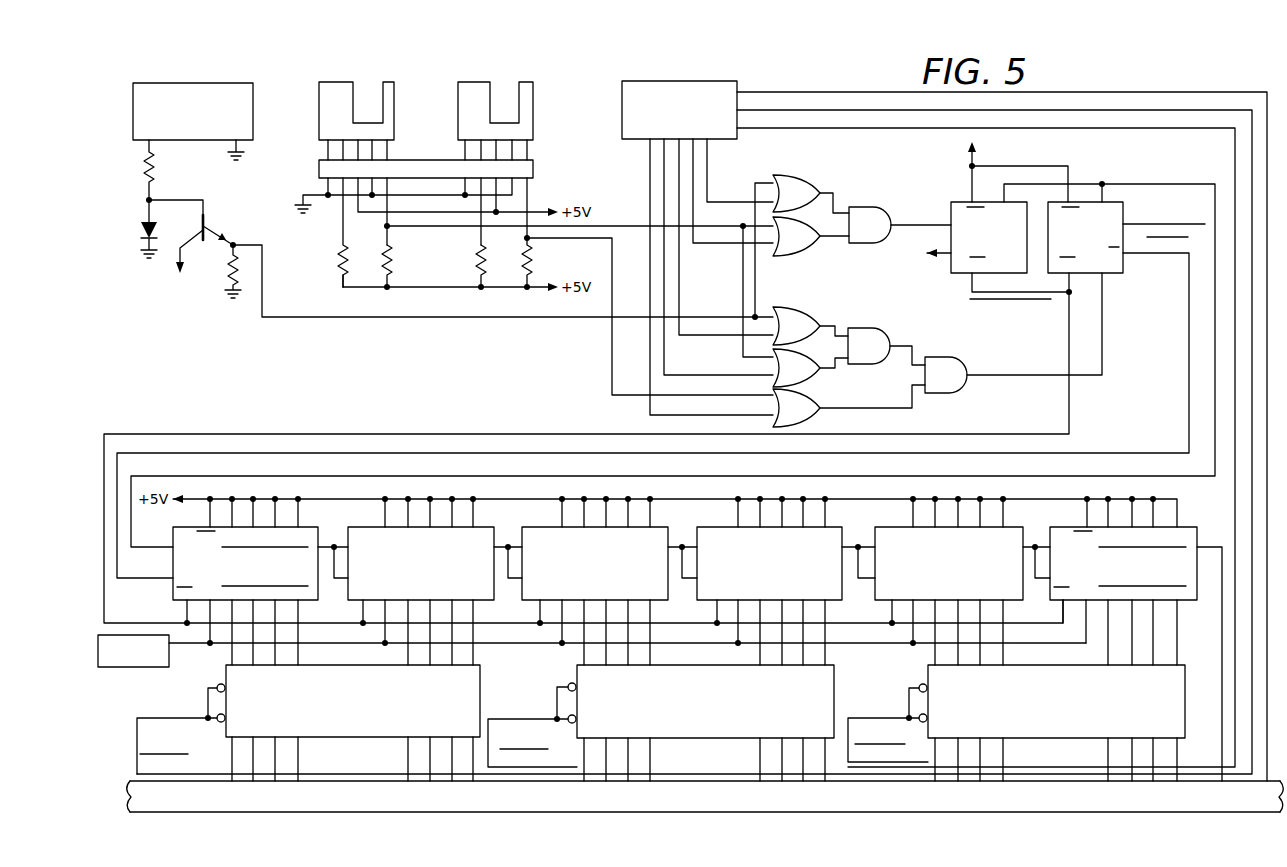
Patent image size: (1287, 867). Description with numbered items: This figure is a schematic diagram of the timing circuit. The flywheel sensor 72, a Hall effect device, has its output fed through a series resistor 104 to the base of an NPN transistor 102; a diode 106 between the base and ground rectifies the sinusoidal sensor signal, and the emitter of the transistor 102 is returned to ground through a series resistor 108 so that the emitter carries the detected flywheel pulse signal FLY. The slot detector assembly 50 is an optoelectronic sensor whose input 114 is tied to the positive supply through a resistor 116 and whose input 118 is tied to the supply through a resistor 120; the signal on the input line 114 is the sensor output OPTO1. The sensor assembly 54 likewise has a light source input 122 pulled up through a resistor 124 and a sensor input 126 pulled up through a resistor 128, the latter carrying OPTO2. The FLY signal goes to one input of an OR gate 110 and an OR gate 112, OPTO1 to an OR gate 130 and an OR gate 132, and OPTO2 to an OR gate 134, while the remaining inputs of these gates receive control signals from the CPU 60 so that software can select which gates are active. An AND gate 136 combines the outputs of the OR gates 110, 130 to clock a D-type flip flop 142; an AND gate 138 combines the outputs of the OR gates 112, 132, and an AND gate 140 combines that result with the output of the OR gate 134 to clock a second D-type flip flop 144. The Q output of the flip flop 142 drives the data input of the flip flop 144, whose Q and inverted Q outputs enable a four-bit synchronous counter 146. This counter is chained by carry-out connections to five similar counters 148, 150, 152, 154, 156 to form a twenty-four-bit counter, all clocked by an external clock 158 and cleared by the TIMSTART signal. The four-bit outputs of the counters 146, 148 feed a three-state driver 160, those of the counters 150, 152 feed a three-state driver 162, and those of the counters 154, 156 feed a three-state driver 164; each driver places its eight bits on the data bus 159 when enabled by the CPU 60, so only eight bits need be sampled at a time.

The slot detector assembly 50 is at (533, 93).
The sensor assembly 54 is at (394, 96).
The CPU 60 is at (740, 84).
The flywheel sensor 72 is at (255, 91).
The NPN transistor 102 is at (210, 224).
The series resistor 104 is at (155, 177).
The diode 106 is at (144, 231).
The series resistor 108 is at (226, 270).
The OR gate 110 is at (786, 201).
The OR gate 112 is at (786, 334).
The input 114 is at (530, 198).
The resistor 116 is at (530, 268).
The input 118 is at (481, 238).
The resistor 120 is at (481, 270).
The light source input 122 is at (343, 248).
The resistor 124 is at (343, 269).
The sensor input 126 is at (385, 232).
The resistor 128 is at (388, 270).
The OR gate 130 is at (786, 244).
The OR gate 132 is at (786, 376).
The OR gate 134 is at (786, 416).
The AND gate 136 is at (857, 233).
The AND gate 138 is at (856, 354).
The AND gate 140 is at (933, 383).
The D-type flip flop 142 is at (950, 276).
The D-type flip flop 144 is at (1125, 276).
The 4-bit synchronous counter 146 is at (315, 525).
The 4-bit synchronous counter 148 is at (488, 525).
The 4-bit synchronous counter 150 is at (662, 525).
The 4-bit synchronous counter 152 is at (837, 525).
The 4-bit synchronous counter 154 is at (1010, 527).
The 4-bit synchronous counter 156 is at (1184, 527).
The external clock 158 is at (128, 667).
The data bus 159 is at (757, 808).
The three-state driver 160 is at (483, 686).
The three-state driver 162 is at (836, 686).
The three-state driver 164 is at (1188, 683).